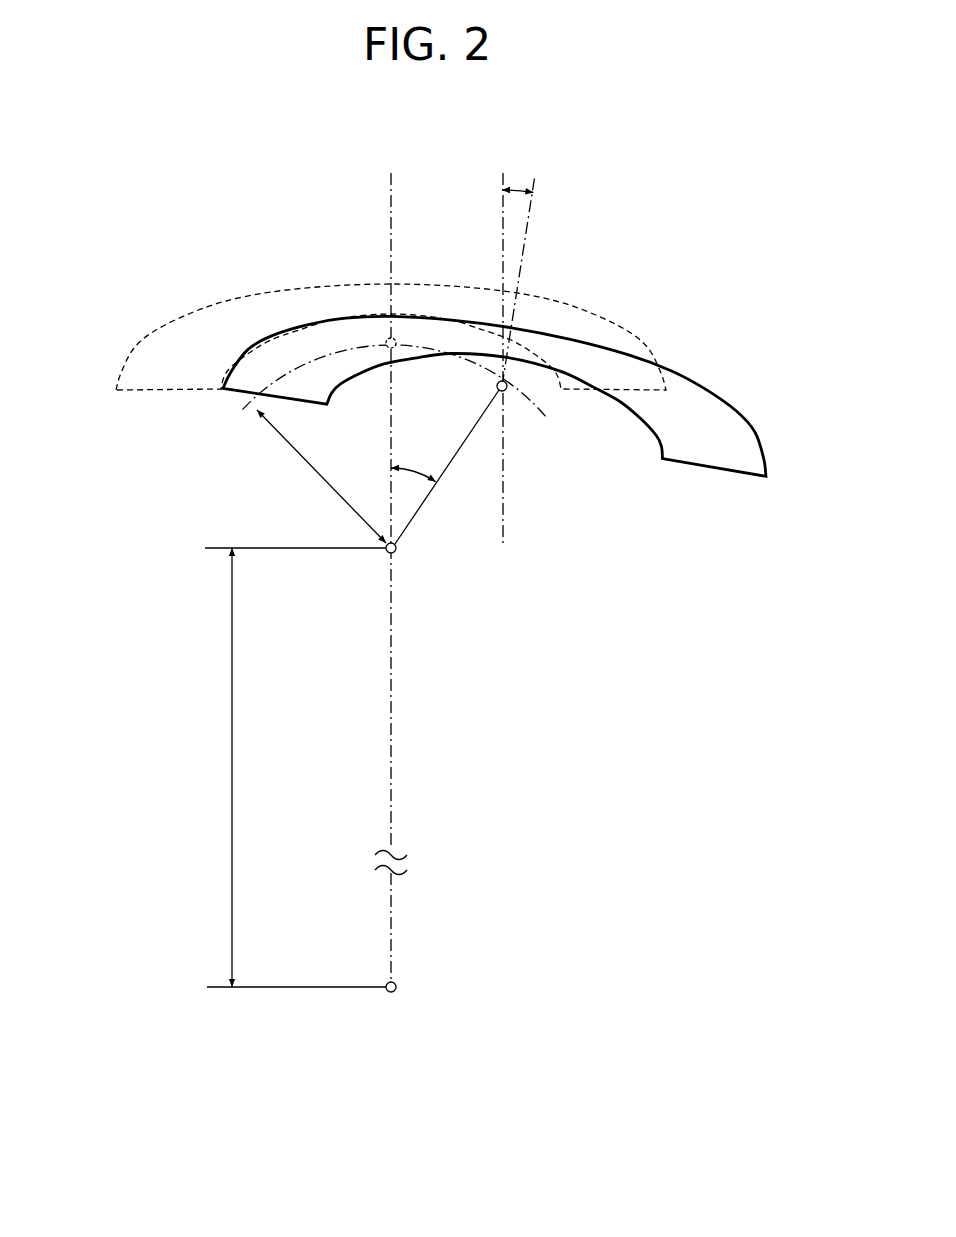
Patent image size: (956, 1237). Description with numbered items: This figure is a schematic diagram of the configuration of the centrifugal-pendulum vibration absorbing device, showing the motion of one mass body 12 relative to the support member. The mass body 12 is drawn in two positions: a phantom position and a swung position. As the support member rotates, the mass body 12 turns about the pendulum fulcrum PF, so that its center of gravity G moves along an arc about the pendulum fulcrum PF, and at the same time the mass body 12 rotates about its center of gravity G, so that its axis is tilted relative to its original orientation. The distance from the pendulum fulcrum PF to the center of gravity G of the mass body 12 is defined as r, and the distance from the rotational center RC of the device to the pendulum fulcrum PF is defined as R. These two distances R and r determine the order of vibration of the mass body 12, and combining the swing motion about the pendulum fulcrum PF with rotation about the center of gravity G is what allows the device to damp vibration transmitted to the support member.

The mass body 12 is at (131, 339).
The center of gravity G is at (383, 340).
The pendulum fulcrum PF is at (397, 549).
The rotational center RC is at (397, 989).
The distance from the pendulum fulcrum to the center of gravity r is at (321, 476).
The distance from the rotational center to the pendulum fulcrum R is at (294, 767).